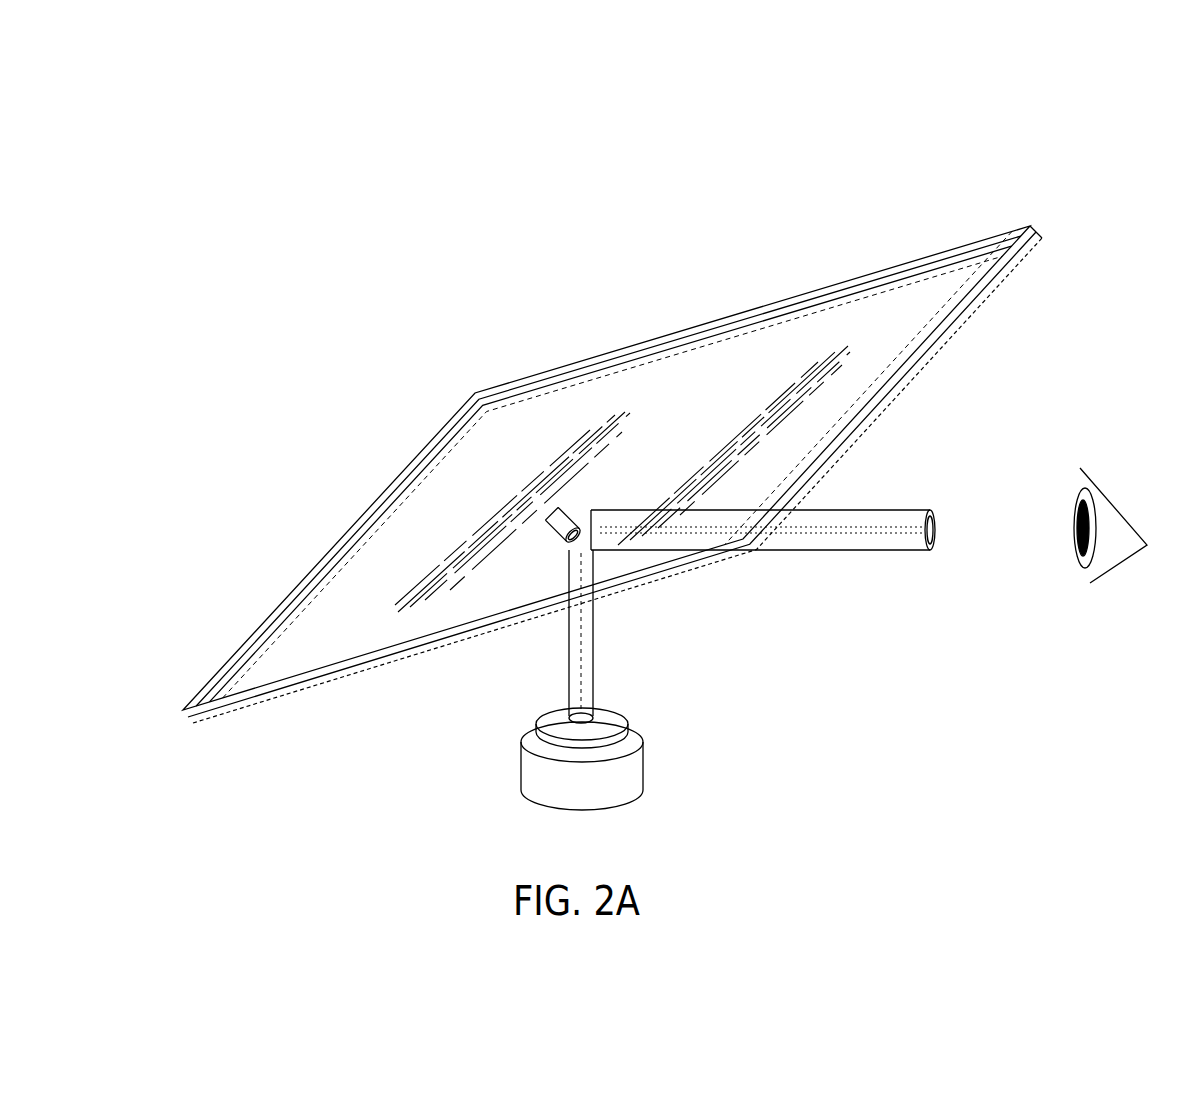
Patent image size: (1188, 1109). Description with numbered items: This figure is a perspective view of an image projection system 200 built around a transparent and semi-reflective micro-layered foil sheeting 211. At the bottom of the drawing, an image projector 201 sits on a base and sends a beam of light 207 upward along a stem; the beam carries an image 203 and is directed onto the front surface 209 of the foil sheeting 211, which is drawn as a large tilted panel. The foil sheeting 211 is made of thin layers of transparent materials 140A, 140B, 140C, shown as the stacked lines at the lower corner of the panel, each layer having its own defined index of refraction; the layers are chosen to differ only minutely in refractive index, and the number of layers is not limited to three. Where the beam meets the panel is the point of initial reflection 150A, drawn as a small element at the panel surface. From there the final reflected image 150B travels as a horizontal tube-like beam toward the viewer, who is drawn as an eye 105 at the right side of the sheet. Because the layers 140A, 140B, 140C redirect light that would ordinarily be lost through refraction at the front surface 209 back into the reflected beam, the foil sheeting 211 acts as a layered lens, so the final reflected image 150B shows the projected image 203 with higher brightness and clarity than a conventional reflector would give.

The image projection system 200 is at (318, 162).
The micro-layered foil sheeting 211 is at (855, 247).
The front surface 209 is at (487, 598).
The first layer of transparent material 140A is at (183, 712).
The second layer of transparent material 140B is at (189, 718).
The third layer of transparent material 140C is at (195, 726).
The point of initial reflection 150A is at (553, 526).
The final reflected image 150B is at (955, 507).
The viewer eye 105 is at (1111, 532).
The image 203 is at (590, 660).
The beam of light 207 is at (612, 681).
The image projector 201 is at (636, 778).